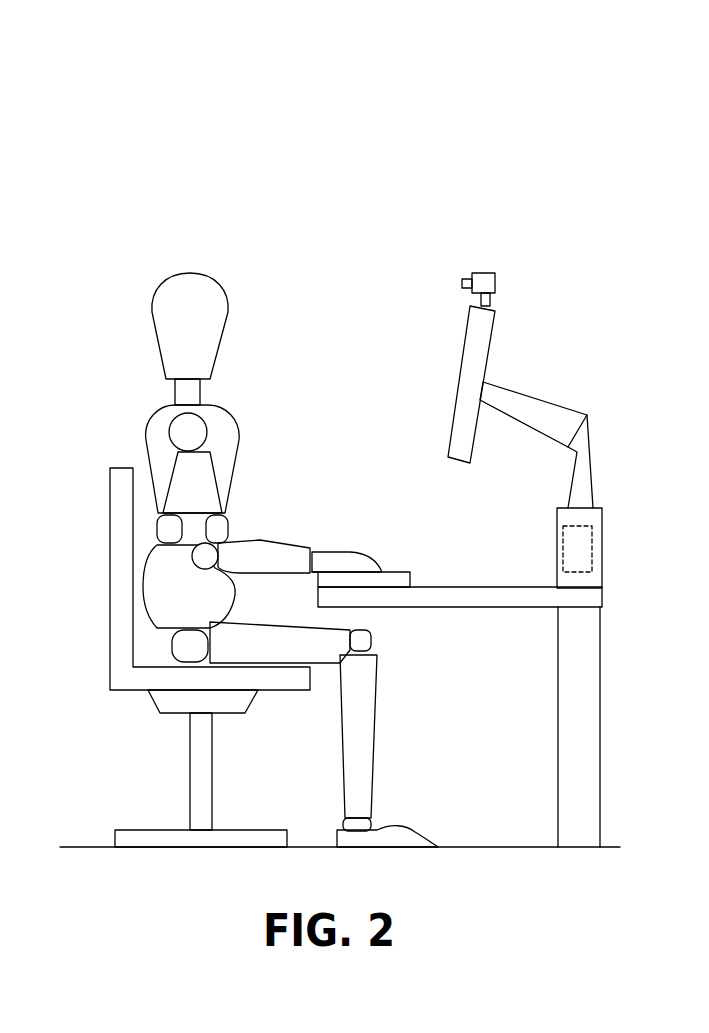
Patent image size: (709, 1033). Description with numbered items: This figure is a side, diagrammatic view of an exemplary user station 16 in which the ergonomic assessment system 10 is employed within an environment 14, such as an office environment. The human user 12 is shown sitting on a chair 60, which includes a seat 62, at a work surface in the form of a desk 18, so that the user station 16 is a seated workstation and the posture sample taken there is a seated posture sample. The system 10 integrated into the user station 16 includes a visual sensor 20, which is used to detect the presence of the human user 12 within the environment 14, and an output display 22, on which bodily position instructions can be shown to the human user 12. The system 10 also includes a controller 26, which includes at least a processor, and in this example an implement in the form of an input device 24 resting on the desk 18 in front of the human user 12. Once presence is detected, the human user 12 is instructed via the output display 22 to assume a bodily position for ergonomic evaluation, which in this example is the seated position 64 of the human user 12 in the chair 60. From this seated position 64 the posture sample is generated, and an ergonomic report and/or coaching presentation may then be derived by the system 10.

The system 10 is at (546, 362).
The human user 12 is at (173, 274).
The environment 14 is at (328, 160).
The user station 16 is at (375, 392).
The desk 18 is at (600, 605).
The visual sensor 20 is at (495, 278).
The output display 22 is at (488, 365).
The input device 24 is at (410, 572).
The controller 26 is at (592, 548).
The chair 60 is at (108, 608).
The seat 62 is at (275, 691).
The seated position 64 is at (257, 460).